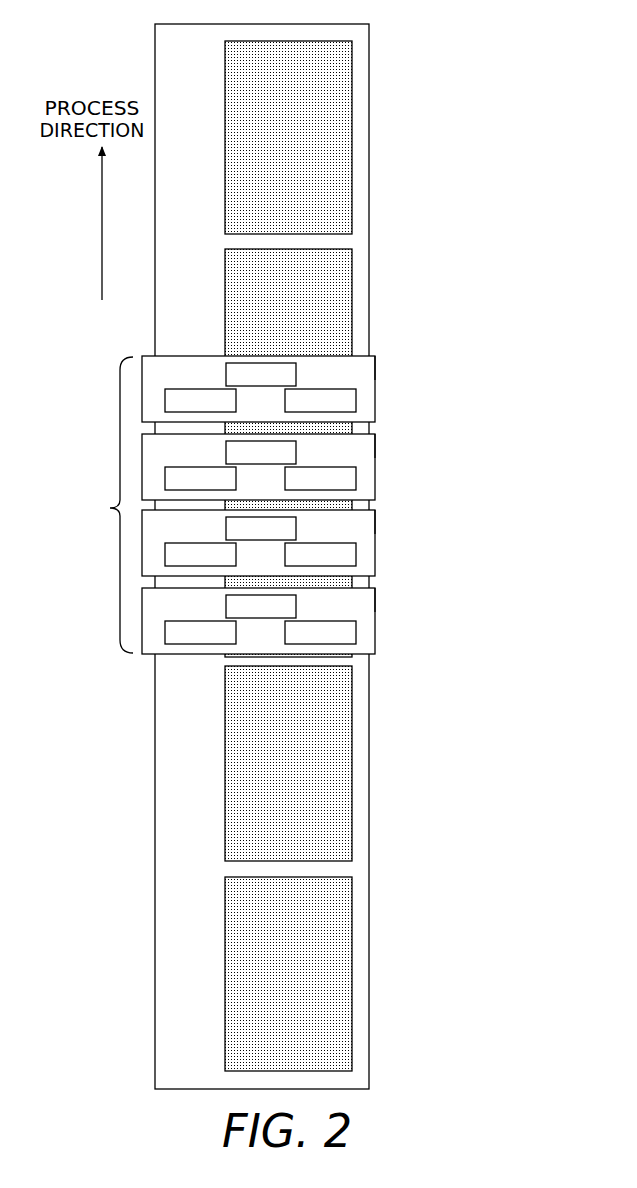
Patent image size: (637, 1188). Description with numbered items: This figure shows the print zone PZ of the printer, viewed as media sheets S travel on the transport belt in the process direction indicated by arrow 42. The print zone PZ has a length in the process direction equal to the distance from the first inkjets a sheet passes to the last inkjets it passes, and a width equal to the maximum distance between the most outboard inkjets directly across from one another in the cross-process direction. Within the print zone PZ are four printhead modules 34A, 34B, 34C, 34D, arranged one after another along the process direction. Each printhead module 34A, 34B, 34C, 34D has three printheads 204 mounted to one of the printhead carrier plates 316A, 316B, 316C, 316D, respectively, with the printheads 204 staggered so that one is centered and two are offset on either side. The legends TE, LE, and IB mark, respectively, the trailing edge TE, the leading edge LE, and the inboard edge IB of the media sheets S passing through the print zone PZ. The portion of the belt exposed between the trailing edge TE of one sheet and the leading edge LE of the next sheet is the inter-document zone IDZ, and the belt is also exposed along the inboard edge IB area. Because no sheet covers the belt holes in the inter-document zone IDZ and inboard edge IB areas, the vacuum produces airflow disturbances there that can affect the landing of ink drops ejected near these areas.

The process direction arrow / belt path 42 is at (146, 263).
The printhead 204 is at (260, 503).
The printhead carrier plate 316A is at (377, 607).
The printhead carrier plate 316B is at (377, 530).
The printhead carrier plate 316C is at (377, 450).
The printhead carrier plate 316D is at (377, 372).
The printhead module 34A is at (380, 626).
The printhead module 34B is at (380, 549).
The printhead module 34C is at (380, 466).
The printhead module 34D is at (380, 388).
The sheet S is at (352, 147).
The inter-document zone IDZ is at (336, 241).
The inboard edge IB is at (262, 556).
The print zone PZ is at (107, 505).
The leading edge LE is at (288, 477).
The trailing edge TE is at (287, 640).